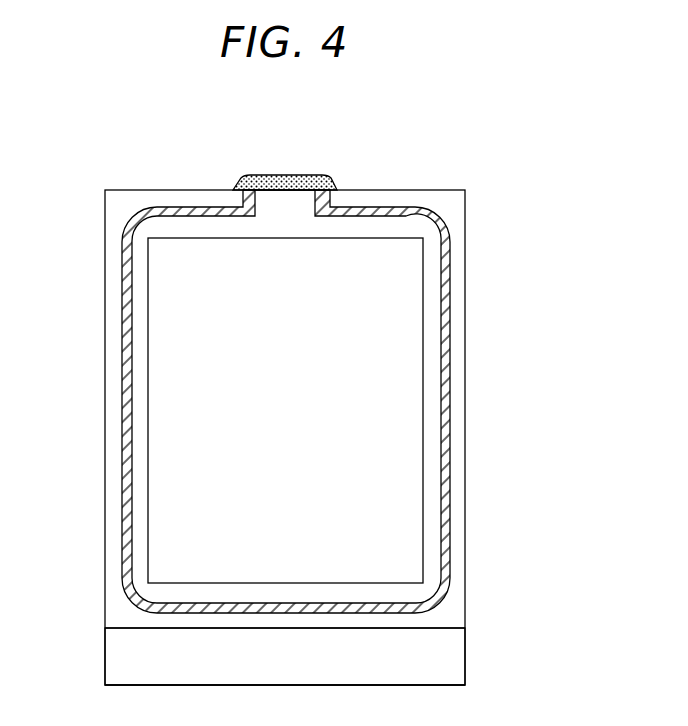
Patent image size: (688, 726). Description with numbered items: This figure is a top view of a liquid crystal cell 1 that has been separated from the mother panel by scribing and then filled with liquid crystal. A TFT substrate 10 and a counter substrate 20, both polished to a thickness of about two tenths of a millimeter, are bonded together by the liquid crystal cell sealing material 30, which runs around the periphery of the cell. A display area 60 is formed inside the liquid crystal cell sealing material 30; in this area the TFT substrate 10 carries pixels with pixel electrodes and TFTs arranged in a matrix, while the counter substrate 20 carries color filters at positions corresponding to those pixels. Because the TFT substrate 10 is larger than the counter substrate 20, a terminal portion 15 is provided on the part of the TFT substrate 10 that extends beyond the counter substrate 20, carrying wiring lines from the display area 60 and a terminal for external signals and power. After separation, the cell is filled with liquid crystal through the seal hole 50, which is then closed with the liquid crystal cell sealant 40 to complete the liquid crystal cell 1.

The liquid crystal cell 1 is at (74, 211).
The TFT substrate 10 is at (465, 638).
The terminal portion 15 is at (442, 660).
The counter substrate 20 is at (465, 488).
The liquid crystal cell sealing material 30 is at (445, 267).
The liquid crystal cell sealant 40 is at (309, 190).
The seal hole 50 is at (273, 206).
The display area 60 is at (423, 378).